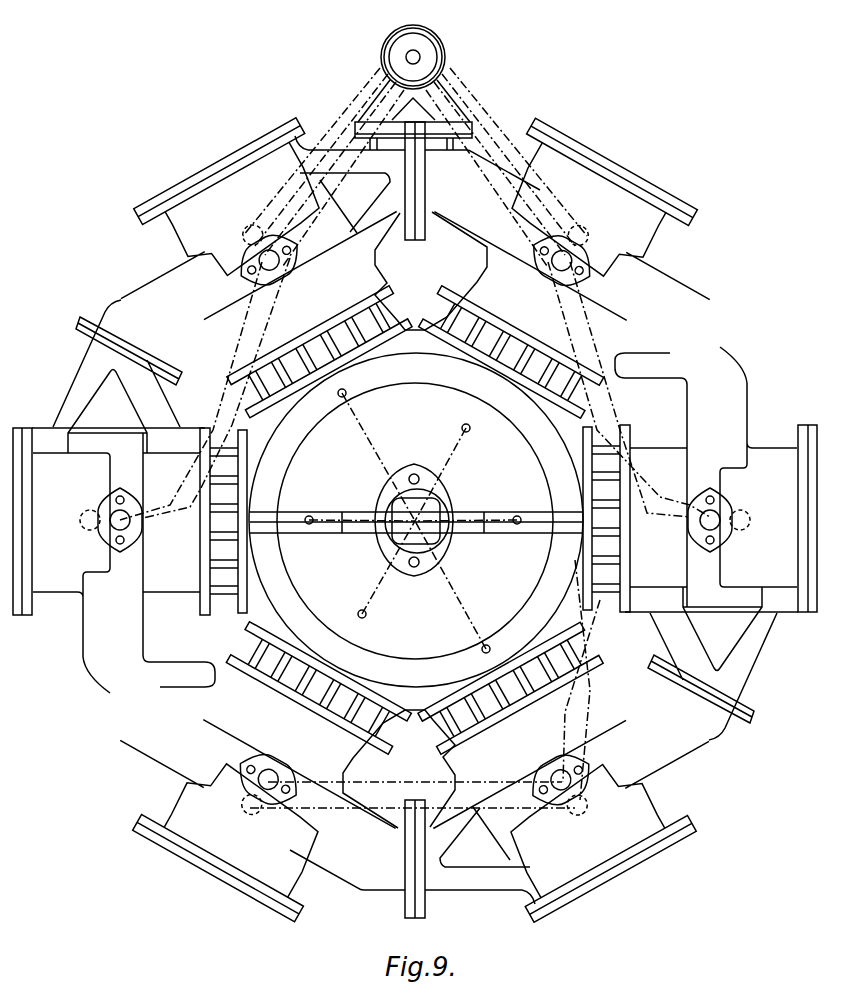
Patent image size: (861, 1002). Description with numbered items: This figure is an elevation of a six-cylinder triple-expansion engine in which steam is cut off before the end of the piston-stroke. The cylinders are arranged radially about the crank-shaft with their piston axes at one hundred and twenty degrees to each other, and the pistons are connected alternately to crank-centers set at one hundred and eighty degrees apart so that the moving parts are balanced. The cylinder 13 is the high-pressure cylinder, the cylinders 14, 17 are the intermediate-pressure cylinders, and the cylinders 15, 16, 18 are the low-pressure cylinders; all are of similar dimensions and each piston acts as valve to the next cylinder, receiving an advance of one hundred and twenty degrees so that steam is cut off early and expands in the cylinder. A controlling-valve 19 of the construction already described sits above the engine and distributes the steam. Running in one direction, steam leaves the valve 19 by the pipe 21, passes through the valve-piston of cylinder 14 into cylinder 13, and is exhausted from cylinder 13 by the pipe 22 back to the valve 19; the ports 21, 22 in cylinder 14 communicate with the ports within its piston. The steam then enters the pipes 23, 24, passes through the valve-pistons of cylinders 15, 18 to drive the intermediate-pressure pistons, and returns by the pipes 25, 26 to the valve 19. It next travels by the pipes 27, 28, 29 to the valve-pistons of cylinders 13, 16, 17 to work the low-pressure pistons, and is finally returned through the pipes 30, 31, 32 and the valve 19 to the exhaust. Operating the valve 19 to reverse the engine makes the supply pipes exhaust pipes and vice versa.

The high-pressure cylinder 13 is at (252, 175).
The intermediate-pressure cylinder 14 is at (618, 200).
The low-pressure cylinder 15 is at (768, 460).
The low-pressure cylinder 16 is at (636, 806).
The intermediate-pressure cylinder 17 is at (280, 878).
The low-pressure cylinder 18 is at (58, 577).
The controlling-valve 19 is at (430, 46).
The port / pipe 21 is at (553, 242).
The port / pipe 22 is at (549, 184).
The pipe 23 is at (647, 513).
The pipe 24 is at (228, 405).
The pipe 25 is at (655, 487).
The pipe 26 is at (222, 390).
The pipe 27 is at (278, 246).
The pipe 28 is at (565, 712).
The pipe 29 is at (417, 776).
The pipe 30 is at (258, 228).
The pipe 31 is at (583, 680).
The pipe 32 is at (395, 808).